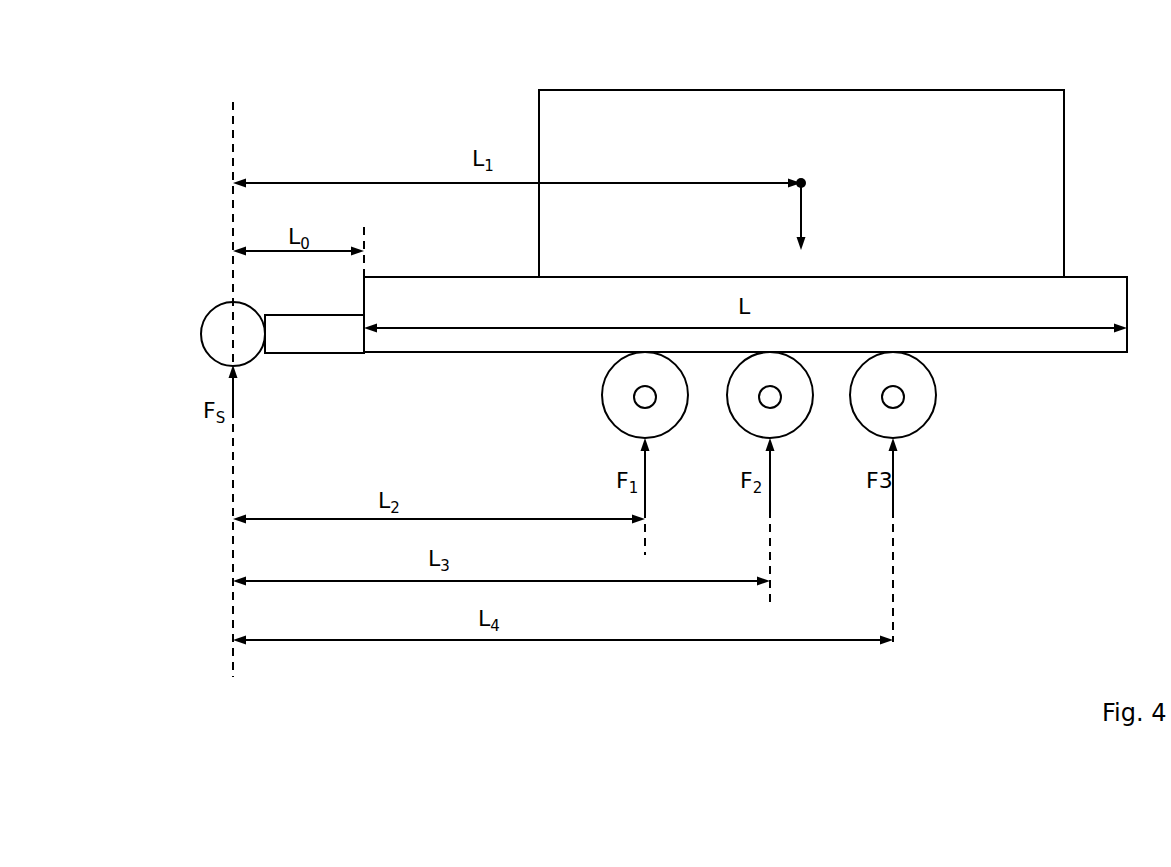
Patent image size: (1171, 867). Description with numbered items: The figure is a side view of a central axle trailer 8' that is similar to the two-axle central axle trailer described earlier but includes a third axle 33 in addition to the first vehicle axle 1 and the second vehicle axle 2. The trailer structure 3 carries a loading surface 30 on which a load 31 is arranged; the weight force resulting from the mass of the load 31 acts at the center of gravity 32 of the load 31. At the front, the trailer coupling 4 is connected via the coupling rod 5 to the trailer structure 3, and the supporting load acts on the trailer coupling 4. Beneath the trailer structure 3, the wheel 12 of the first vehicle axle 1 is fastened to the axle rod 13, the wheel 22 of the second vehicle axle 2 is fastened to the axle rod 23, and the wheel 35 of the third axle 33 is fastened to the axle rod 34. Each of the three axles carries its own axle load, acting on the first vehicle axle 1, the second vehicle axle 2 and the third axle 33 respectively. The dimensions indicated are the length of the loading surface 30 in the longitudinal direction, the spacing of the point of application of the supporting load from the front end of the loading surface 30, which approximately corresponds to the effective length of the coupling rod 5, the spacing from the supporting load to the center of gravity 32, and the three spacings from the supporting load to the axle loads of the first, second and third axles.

The central axle trailer 8' is at (659, 257).
The trailer structure 3 is at (1092, 353).
The loading surface 30 is at (1100, 277).
The load 31 is at (1065, 150).
The center of gravity 32 is at (804, 178).
The trailer coupling 4 is at (207, 316).
The coupling rod 5 is at (334, 354).
The first vehicle axle 1 is at (588, 425).
The wheel 12 is at (620, 436).
The axle rod 13 is at (653, 389).
The second vehicle axle 2 is at (715, 427).
The wheel 22 is at (745, 436).
The axle rod 23 is at (778, 389).
The third axle 33 is at (835, 428).
The wheel 35 is at (868, 436).
The axle rod 34 is at (901, 389).